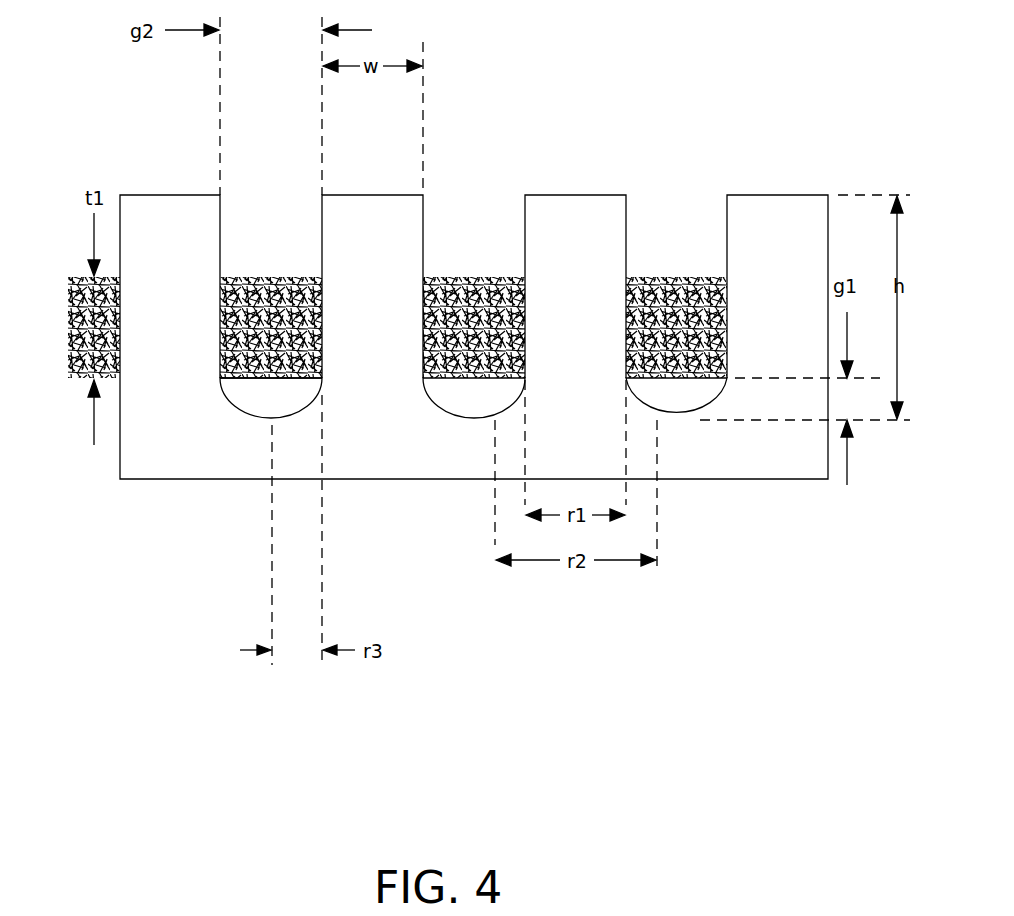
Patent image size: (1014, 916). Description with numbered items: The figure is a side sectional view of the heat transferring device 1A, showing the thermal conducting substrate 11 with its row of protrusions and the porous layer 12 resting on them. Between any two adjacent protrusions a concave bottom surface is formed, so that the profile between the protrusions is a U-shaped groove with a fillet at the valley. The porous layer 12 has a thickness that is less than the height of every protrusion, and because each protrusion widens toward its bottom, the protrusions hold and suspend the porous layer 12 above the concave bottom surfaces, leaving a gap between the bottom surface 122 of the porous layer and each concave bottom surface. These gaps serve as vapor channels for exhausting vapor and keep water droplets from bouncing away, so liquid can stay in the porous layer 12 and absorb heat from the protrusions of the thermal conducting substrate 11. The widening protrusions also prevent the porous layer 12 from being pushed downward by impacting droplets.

The heat transferring device 1A is at (76, 47).
The thermal conducting substrate 11 is at (580, 466).
The porous layer 12 is at (72, 370).
The bottom surface of the porous layer 122 is at (248, 382).